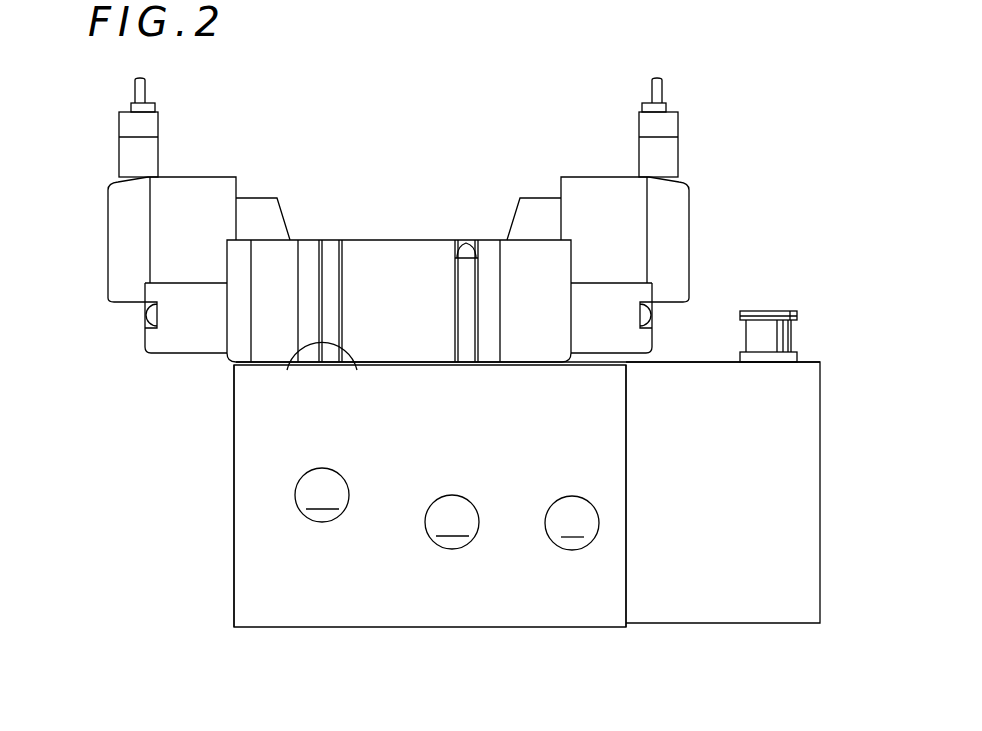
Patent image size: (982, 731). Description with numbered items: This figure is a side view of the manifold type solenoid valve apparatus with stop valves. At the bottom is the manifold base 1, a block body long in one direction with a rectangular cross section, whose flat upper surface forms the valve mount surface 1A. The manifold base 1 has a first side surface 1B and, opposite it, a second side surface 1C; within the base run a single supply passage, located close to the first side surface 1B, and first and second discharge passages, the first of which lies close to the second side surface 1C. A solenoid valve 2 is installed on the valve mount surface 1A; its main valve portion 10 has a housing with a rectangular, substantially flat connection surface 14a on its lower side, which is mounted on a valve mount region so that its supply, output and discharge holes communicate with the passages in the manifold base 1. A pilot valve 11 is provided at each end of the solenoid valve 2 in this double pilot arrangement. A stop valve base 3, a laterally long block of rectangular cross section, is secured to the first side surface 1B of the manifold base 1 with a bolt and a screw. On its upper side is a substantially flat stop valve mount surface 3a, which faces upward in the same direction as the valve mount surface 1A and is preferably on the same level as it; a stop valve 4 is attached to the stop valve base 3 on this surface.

The manifold base 1 is at (262, 466).
The valve mount surface 1A is at (287, 370).
The first side surface 1B is at (627, 577).
The second side surface 1C is at (234, 540).
The solenoid valve 2 is at (365, 191).
The stop valve base 3 is at (790, 418).
The stop valve mount surface 3a is at (800, 362).
The stop valve 4 is at (773, 350).
The main valve portion 10 is at (434, 228).
The pilot valve 11 is at (212, 187).
The connection surface 14a is at (433, 366).